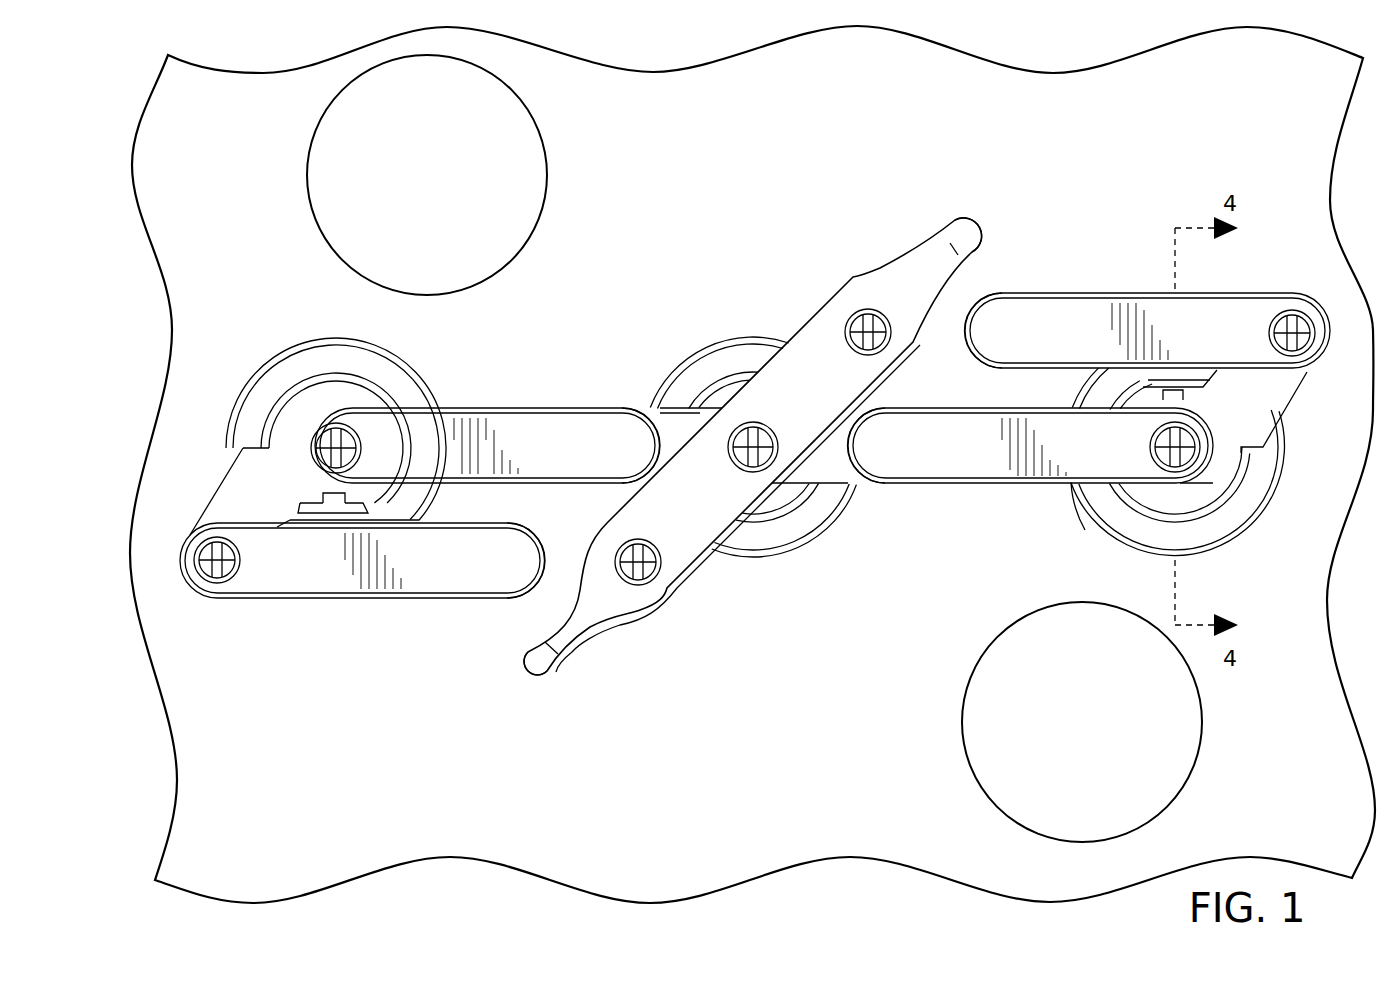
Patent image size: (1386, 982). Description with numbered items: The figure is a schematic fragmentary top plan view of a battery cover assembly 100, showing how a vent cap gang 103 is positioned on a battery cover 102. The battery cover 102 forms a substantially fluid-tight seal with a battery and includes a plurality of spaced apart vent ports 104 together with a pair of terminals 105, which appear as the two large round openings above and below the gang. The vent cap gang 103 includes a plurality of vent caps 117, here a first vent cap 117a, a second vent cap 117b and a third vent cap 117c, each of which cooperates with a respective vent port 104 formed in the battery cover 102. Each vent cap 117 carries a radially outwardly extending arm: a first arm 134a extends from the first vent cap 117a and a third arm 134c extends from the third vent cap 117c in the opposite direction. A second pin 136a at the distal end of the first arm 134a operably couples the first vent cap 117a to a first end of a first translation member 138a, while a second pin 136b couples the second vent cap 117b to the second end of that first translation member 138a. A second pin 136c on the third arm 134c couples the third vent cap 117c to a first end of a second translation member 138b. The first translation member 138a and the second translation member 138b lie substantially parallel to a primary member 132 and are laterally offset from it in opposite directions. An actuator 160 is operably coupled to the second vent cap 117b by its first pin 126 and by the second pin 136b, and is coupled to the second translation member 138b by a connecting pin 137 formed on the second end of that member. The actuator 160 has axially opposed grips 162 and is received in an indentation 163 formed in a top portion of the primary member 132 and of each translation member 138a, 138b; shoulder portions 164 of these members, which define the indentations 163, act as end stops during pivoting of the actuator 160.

The battery cover assembly 100 is at (204, 40).
The battery cover 102 is at (736, 183).
The vent cap gang 103 is at (1216, 150).
The vent port 104 is at (1063, 495).
The terminal 105 is at (326, 248).
The vent cap 117 is at (245, 412).
The first vent cap 117a is at (245, 438).
The second vent cap 117b is at (748, 358).
The third vent cap 117c is at (1261, 467).
The first pin 126 is at (334, 422).
The primary member 132 is at (535, 447).
The first arm 134a is at (256, 492).
The third arm 134c is at (1290, 390).
The second pin 136a is at (221, 578).
The second pin 136b is at (660, 568).
The second pin 136c is at (1290, 315).
The connecting pin 137 is at (866, 310).
The first translation member 138a is at (333, 600).
The second translation member 138b is at (1136, 325).
The actuator 160 is at (907, 300).
The grip 162 is at (952, 262).
The indentation 163 is at (560, 553).
The shoulder portion 164 is at (670, 413).